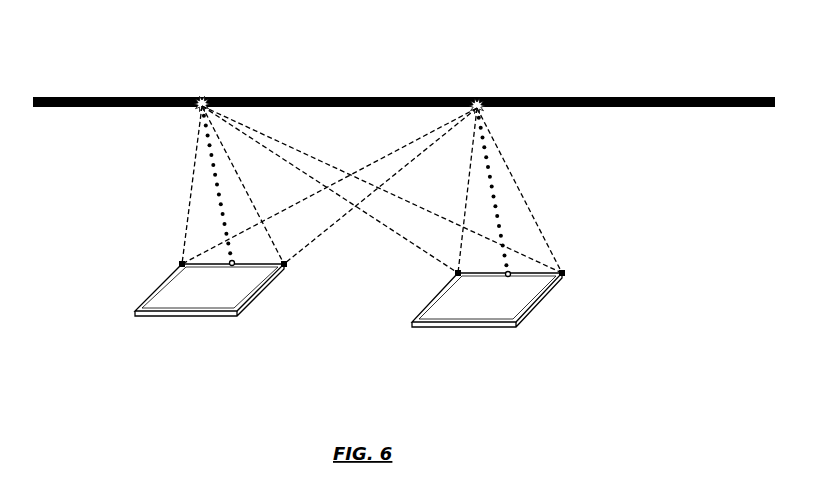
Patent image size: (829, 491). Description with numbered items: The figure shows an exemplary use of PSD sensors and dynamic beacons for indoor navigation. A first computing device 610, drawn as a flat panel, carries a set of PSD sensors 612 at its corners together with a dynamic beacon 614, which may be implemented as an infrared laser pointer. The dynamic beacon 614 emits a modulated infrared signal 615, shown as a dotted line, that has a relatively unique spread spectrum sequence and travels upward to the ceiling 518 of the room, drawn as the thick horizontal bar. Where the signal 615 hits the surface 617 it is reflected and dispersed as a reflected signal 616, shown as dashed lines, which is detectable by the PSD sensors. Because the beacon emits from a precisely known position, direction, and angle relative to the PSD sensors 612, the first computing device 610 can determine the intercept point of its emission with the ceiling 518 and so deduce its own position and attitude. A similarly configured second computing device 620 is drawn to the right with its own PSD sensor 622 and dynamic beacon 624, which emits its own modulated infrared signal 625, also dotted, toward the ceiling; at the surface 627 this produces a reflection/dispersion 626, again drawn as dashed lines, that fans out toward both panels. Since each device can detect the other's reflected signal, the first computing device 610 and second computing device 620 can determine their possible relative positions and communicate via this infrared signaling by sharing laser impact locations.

The ceiling 518 is at (140, 93).
The surface 617 is at (195, 88).
The surface 627 is at (495, 95).
The reflected signal 616 is at (304, 158).
The reflection/dispersion 626 is at (406, 158).
The modulated infrared signal 615 is at (204, 194).
The modulated infrared signal 625 is at (512, 208).
The first computing device 610 is at (127, 280).
The second computing device 620 is at (561, 297).
The PSD sensors 612 is at (182, 264).
The PSD sensor 622 is at (458, 273).
The dynamic beacon 614 is at (223, 280).
The dynamic beacon 624 is at (499, 290).